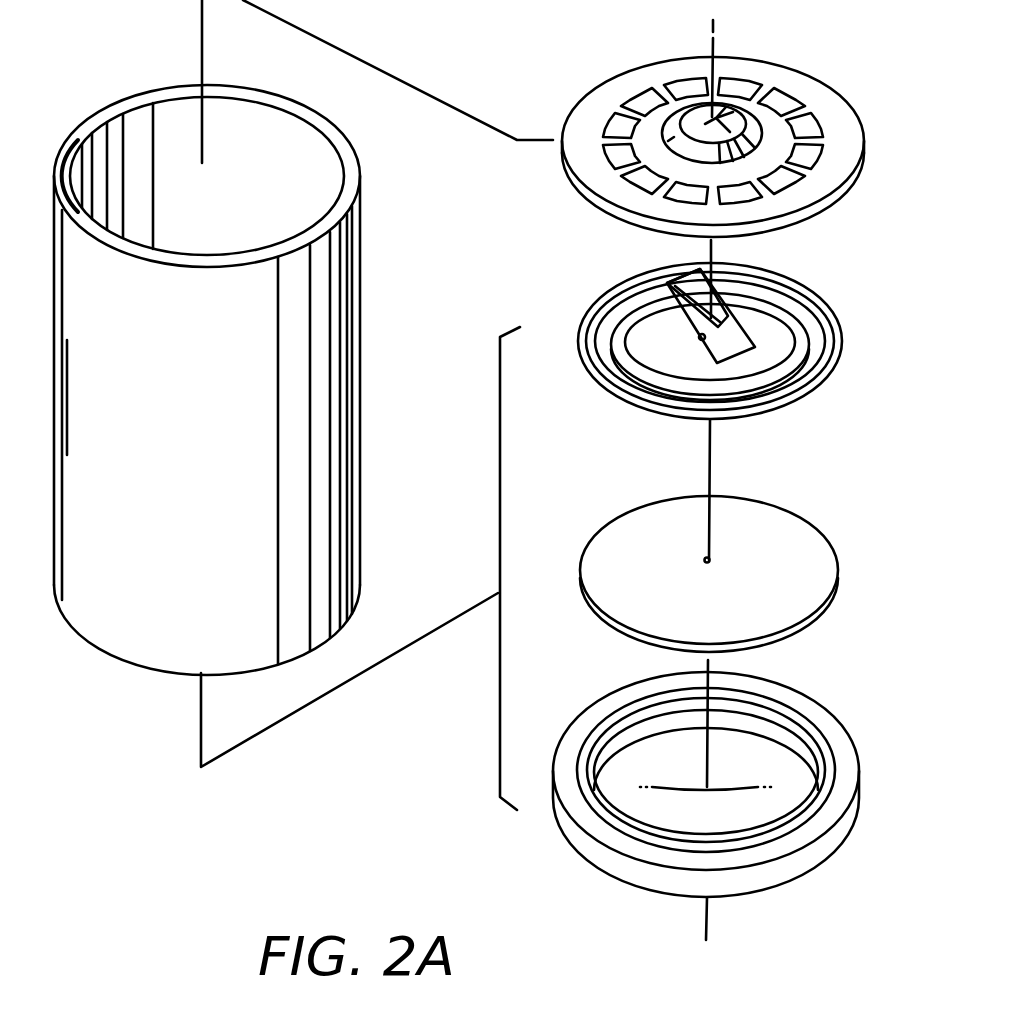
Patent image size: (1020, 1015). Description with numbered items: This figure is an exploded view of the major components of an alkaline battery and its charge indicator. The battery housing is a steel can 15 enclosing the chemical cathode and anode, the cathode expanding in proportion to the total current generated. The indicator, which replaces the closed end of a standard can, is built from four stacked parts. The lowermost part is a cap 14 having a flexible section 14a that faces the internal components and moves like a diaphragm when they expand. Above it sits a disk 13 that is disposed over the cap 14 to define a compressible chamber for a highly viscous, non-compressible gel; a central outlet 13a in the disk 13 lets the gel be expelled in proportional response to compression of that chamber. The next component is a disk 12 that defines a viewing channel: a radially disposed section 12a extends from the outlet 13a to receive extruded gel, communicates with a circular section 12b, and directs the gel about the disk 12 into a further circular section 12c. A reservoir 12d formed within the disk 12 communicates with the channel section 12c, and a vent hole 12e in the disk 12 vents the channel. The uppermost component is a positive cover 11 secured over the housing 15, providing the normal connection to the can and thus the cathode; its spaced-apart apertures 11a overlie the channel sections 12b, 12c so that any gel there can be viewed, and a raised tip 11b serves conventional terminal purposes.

The positive cover 11 is at (734, 123).
The apertures 11a is at (803, 118).
The raised tip 11b is at (697, 116).
The disk 12 is at (712, 357).
The radially disposed channel section 12a is at (670, 270).
The circular channel section 12b is at (622, 353).
The circular channel section 12c is at (800, 335).
The reservoir 12d is at (753, 317).
The vent hole 12e is at (702, 340).
The disk 13 is at (725, 571).
The outlet 13a is at (710, 561).
The cap 14 is at (716, 779).
The flexible section 14a is at (757, 762).
The steel can 15 is at (342, 357).